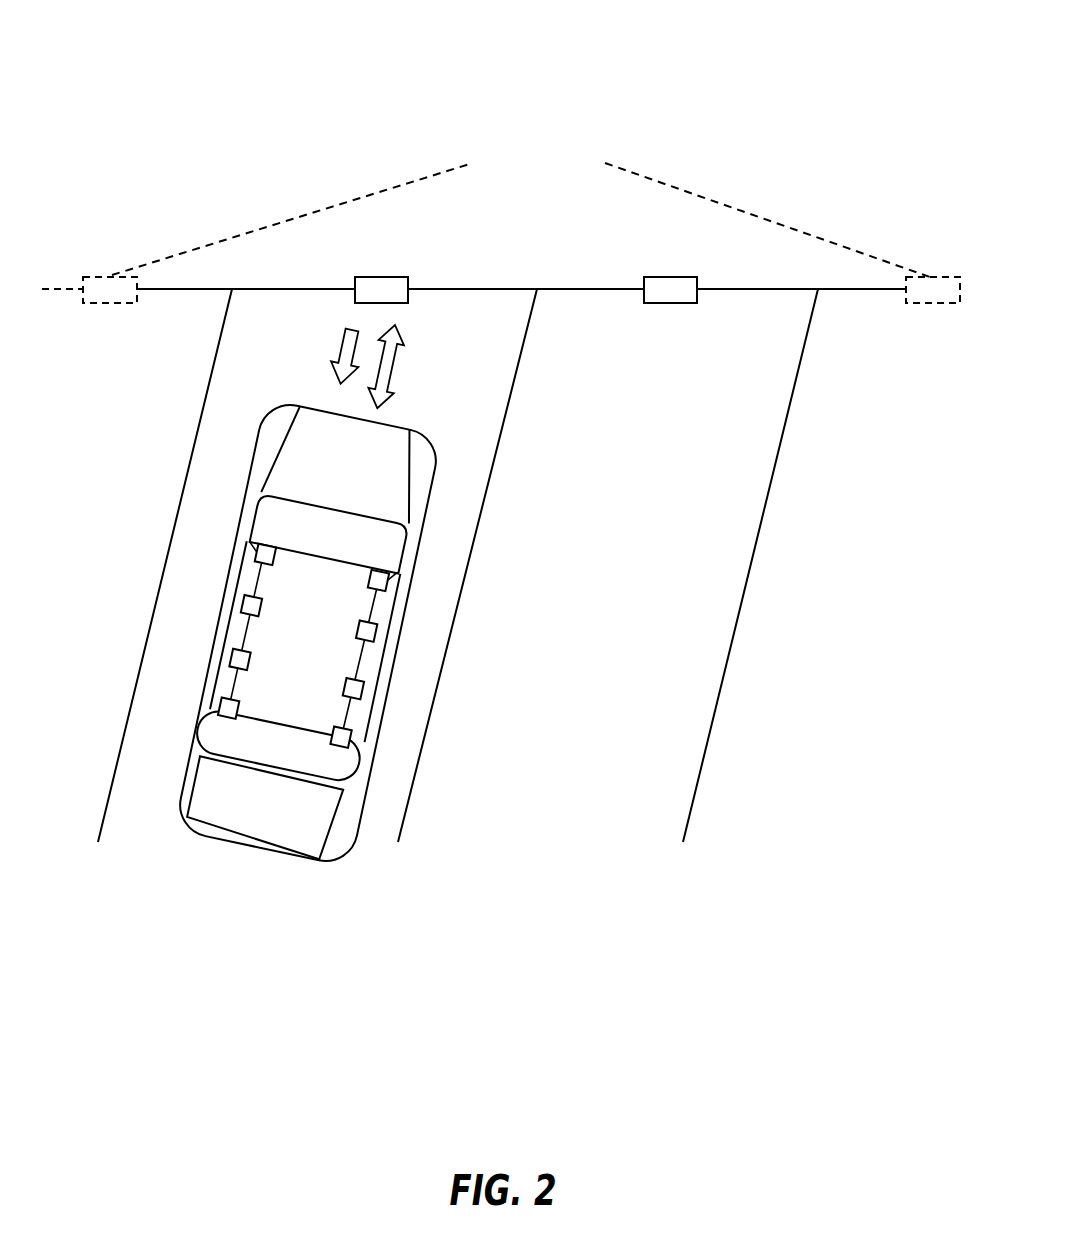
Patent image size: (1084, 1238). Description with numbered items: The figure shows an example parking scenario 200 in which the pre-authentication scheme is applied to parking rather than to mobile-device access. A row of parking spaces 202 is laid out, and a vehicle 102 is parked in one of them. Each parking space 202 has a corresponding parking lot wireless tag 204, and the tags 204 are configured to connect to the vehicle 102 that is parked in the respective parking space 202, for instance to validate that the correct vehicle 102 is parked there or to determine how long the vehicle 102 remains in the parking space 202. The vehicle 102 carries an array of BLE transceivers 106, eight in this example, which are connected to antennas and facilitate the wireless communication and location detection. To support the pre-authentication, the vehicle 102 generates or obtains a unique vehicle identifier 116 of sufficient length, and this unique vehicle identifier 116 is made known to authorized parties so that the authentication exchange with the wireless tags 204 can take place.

The parking scenario 200 is at (187, 47).
The parking lot wireless tag 204 is at (382, 277).
The parking space 202 is at (776, 844).
The unique vehicle identifier 116 is at (295, 353).
The vehicle 102 is at (308, 633).
The BLE transceiver 106 is at (315, 626).